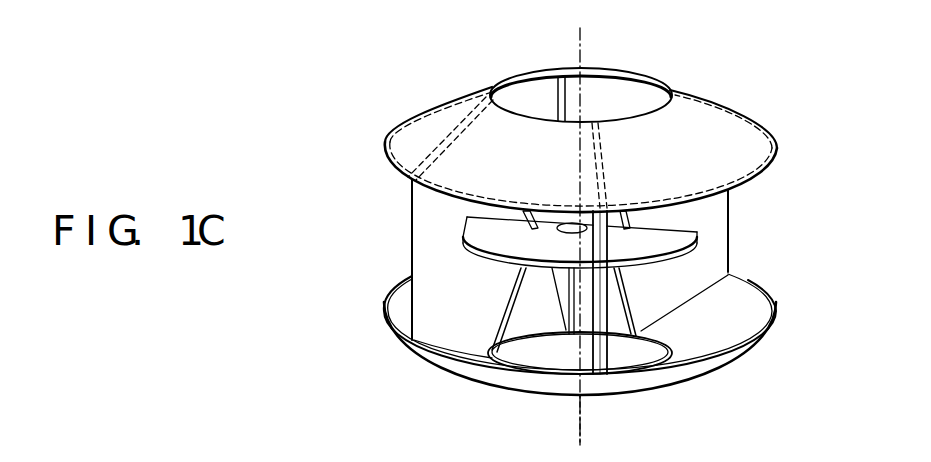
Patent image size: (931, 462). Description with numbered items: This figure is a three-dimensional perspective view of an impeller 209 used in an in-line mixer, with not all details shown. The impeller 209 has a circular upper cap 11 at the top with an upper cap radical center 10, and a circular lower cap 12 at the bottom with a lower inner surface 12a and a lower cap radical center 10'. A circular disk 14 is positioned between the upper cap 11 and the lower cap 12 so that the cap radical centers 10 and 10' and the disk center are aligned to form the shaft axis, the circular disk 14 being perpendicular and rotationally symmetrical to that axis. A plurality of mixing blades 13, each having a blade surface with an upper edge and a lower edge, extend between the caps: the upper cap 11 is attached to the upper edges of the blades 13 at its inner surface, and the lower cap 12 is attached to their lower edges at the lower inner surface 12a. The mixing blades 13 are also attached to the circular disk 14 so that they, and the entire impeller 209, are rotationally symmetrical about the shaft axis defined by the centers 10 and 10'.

The upper cap radical center 10 is at (602, 233).
The lower cap radical center 10' is at (606, 420).
The circular upper cap 11 is at (740, 132).
The circular lower cap 12 is at (730, 357).
The lower inner surface 12a is at (753, 321).
The mixing blades 13 is at (720, 213).
The circular disk 14 is at (673, 238).
The impeller 209 is at (362, 220).